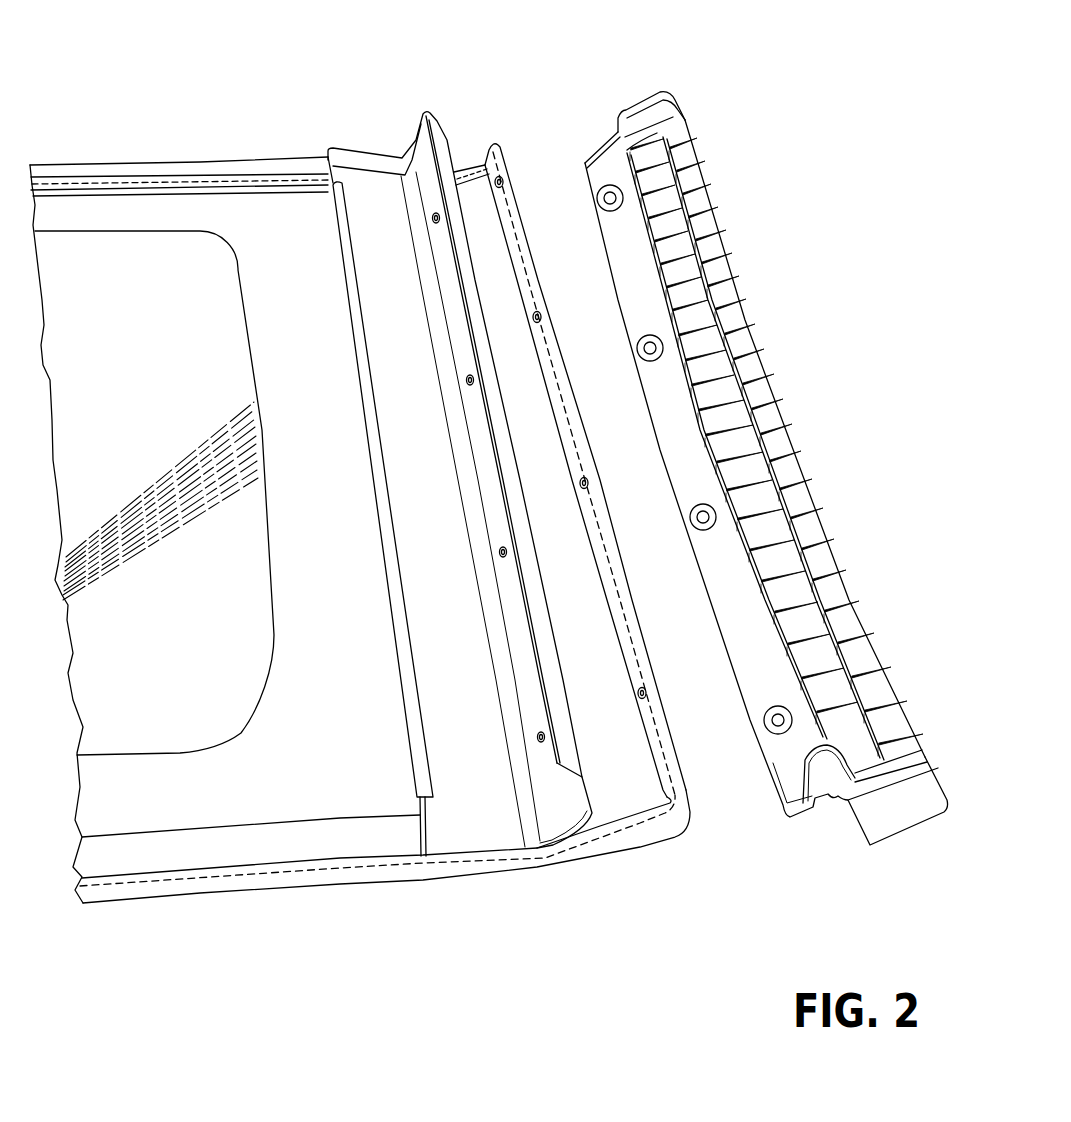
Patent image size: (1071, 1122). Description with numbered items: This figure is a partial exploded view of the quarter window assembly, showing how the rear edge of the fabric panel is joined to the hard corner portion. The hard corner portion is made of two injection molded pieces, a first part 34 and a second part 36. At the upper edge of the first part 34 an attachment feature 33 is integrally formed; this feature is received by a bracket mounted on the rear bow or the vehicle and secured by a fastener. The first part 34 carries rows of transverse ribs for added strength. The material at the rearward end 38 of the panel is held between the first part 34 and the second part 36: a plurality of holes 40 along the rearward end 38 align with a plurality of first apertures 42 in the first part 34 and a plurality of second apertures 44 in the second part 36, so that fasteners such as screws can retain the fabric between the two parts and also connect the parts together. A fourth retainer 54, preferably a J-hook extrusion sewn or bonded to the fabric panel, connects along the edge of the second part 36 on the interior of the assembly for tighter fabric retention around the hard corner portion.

The attachment feature 33 is at (641, 103).
The first part 34 is at (758, 435).
The second part 36 is at (460, 510).
The rearward end 38 is at (585, 468).
The holes 40 is at (585, 484).
The first apertures 42 is at (702, 522).
The second apertures 44 is at (502, 554).
The fourth retainer 54 is at (340, 226).